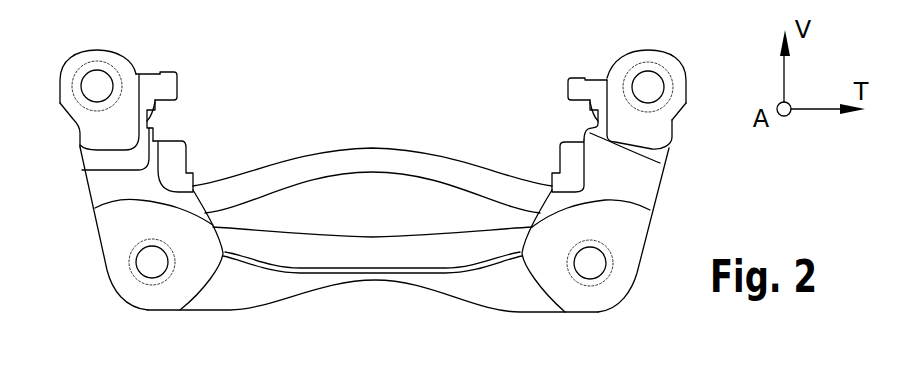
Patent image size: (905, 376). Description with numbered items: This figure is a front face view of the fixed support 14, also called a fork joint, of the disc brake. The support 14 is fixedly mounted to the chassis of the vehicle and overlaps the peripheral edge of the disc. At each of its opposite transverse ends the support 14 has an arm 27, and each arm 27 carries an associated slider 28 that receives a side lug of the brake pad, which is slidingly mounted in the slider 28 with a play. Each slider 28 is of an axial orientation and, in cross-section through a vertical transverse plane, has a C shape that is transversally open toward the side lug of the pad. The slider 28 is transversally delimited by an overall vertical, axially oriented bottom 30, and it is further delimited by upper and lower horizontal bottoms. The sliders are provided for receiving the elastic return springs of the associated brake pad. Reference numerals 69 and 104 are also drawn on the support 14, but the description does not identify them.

The support 14 is at (105, 320).
The arm 27 is at (147, 88).
The slider 28 is at (172, 125).
The vertical bottom 30 is at (166, 100).
The bracket arm 69 is at (84, 170).
The upper abutment notch 104 is at (175, 87).